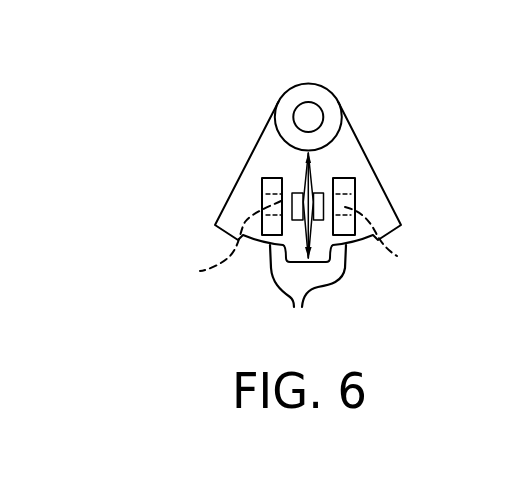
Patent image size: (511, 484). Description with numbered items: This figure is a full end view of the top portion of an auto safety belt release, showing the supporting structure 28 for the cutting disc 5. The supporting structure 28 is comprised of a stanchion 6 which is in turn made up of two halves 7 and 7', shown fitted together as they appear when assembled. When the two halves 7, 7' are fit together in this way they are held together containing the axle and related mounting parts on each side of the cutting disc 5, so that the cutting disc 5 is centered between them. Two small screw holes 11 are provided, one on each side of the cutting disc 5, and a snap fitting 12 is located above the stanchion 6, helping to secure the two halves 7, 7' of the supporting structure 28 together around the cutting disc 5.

The supporting structure 28 is at (384, 97).
The snap fitting 12 is at (314, 92).
The cutting disc 5 is at (313, 182).
The first stanchion half 7 is at (271, 188).
The second stanchion half 7' is at (344, 188).
The small screw holes 11 is at (304, 245).
The stanchion 6 is at (308, 291).